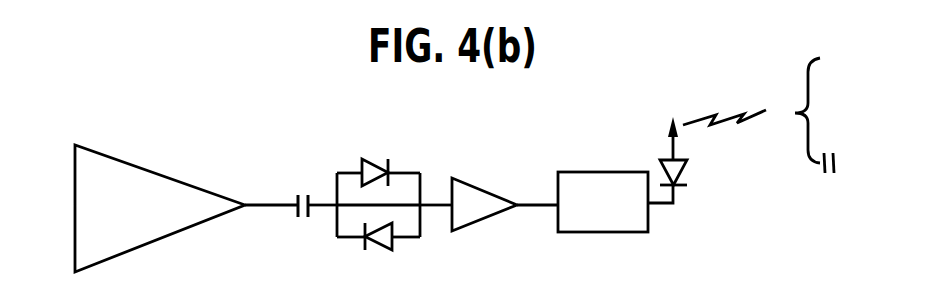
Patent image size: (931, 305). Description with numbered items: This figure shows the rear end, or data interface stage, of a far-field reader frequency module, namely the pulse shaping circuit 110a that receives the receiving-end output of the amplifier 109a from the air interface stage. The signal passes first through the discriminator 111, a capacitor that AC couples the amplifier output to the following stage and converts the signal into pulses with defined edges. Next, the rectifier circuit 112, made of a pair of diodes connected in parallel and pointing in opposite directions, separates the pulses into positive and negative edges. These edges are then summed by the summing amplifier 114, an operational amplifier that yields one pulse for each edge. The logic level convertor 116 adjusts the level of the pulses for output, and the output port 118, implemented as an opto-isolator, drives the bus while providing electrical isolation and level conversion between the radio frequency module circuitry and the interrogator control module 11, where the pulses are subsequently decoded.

The interrogator control module 11 is at (846, 122).
The amplifier 109a is at (171, 236).
The pulse shaping circuit 110a is at (523, 110).
The discriminator 111 is at (296, 218).
The rectifier circuit 112 is at (426, 153).
The summing amplifier 114 is at (482, 220).
The logic level convertor 116 is at (607, 233).
The output port 118 is at (685, 176).